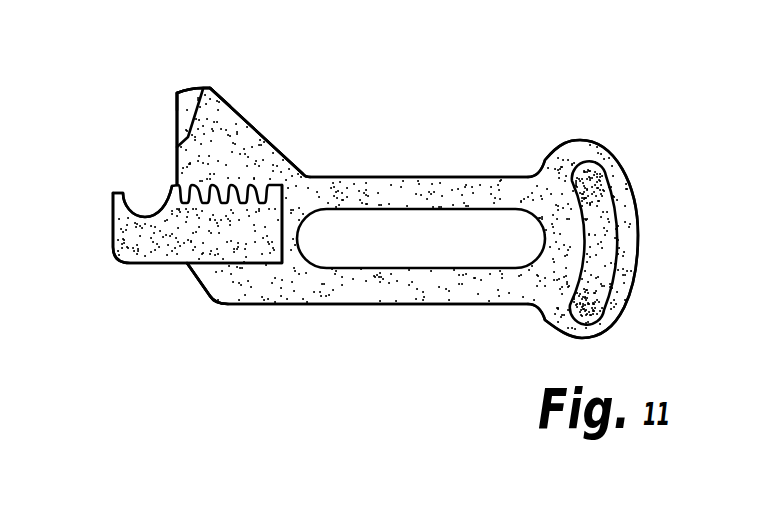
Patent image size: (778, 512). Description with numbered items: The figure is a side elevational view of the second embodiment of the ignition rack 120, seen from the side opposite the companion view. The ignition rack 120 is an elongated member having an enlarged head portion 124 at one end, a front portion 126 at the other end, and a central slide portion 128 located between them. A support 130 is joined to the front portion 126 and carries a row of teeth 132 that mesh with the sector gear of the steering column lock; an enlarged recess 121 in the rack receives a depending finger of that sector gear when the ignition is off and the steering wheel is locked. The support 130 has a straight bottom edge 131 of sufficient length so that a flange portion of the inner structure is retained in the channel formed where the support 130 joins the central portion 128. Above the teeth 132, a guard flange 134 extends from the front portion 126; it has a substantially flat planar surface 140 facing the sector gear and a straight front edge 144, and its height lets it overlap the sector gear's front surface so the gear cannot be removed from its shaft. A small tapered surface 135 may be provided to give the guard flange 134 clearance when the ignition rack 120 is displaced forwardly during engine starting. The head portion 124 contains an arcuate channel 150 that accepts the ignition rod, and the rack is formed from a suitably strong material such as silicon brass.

The ignition rack 120 is at (569, 107).
The enlarged recess 121 is at (130, 208).
The enlarged head portion 124 is at (644, 116).
The front portion 126 is at (225, 58).
The central slide portion 128 is at (426, 158).
The support 130 is at (146, 294).
The bottom edge 131 is at (172, 265).
The teeth 132 is at (231, 134).
The guard flange 134 is at (181, 72).
The tapered surface 135 is at (177, 94).
The flat planar surface 140 is at (253, 157).
The straight front edge 144 is at (177, 125).
The arcuate channel 150 is at (603, 205).